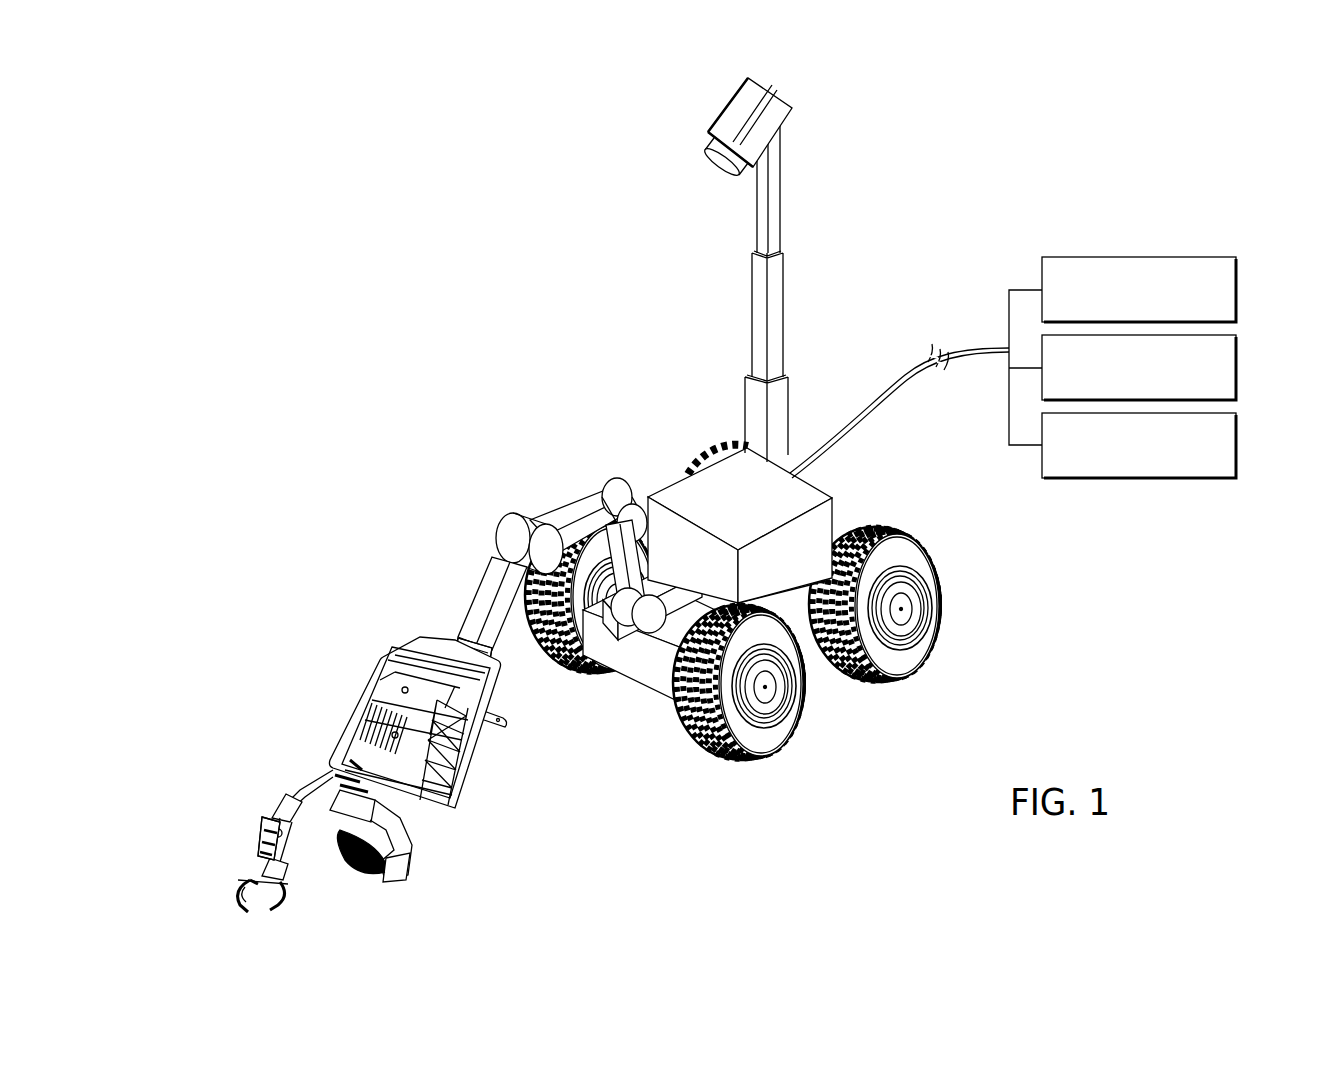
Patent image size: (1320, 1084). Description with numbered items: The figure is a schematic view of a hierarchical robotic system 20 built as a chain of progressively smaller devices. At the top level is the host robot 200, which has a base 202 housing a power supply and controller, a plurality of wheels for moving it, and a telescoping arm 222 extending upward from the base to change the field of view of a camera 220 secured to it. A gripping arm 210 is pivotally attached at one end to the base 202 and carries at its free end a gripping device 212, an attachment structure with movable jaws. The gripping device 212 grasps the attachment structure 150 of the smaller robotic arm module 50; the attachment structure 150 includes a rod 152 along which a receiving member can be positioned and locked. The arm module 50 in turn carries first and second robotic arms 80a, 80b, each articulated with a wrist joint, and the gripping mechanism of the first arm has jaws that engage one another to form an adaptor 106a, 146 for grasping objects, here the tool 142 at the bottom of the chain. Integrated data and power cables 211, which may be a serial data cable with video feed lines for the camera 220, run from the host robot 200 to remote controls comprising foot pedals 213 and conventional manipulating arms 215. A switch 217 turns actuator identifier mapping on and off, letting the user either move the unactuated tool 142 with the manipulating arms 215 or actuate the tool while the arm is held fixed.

The robotic system 20 is at (381, 430).
The robotic arm module 50 is at (345, 702).
The first robotic arm 80a is at (255, 793).
The second robotic arm 80b is at (418, 884).
The adaptor 106a is at (245, 863).
The wrist joint 146 is at (269, 838).
The tool 142 is at (222, 894).
The attachment structure 150 is at (494, 699).
The gripping device 212 is at (472, 664).
The rod 152 is at (484, 726).
The host robot 200 is at (868, 480).
The base 202 is at (846, 538).
The gripping arm 210 is at (561, 500).
The integrated data and power cables 211 is at (920, 370).
The foot pedals 213 is at (1237, 288).
The manipulating arms 215 is at (1237, 366).
The switch 217 is at (1237, 444).
The camera 220 is at (730, 112).
The telescoping arm 222 is at (782, 212).